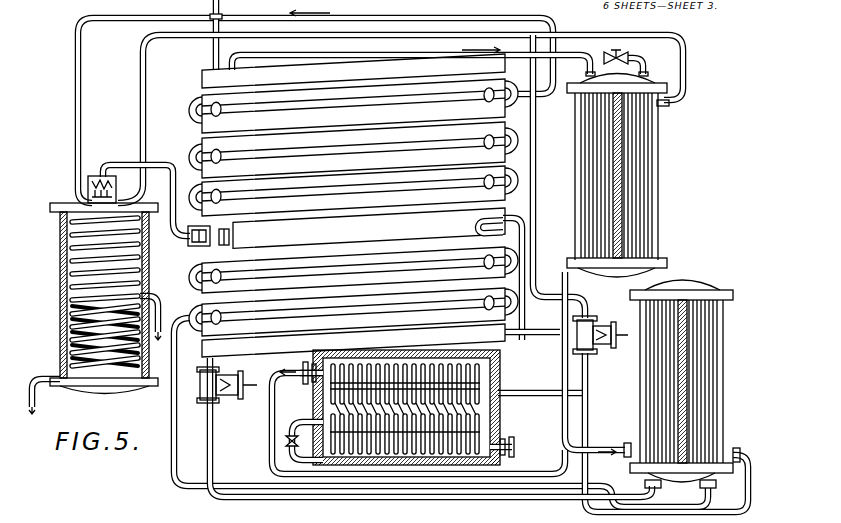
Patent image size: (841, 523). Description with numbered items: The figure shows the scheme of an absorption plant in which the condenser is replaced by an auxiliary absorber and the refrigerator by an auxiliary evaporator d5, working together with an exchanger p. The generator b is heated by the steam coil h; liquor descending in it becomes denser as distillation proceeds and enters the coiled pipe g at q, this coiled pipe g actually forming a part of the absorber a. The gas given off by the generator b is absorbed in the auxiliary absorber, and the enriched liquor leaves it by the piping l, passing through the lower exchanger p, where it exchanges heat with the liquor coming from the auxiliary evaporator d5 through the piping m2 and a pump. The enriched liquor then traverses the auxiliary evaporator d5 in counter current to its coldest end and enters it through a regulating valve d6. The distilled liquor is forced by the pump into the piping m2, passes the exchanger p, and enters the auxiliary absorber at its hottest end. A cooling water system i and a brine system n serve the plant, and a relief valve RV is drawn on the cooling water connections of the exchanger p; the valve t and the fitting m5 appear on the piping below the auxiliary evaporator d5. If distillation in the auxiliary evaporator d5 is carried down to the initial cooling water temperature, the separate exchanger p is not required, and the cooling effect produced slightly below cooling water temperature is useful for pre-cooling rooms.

The absorber a is at (353, 205).
The generator b is at (171, 243).
The auxiliary evaporator d5 is at (305, 366).
The regulating valve d6 is at (292, 462).
The coiled pipe g is at (100, 285).
The steam coil h is at (160, 299).
The cooling water system i is at (230, 239).
The piping l is at (222, 12).
The piping m2 is at (474, 498).
The valve motor m5 is at (268, 412).
The brine system n is at (288, 379).
The exchanger p is at (667, 158).
The entry of pipe g q is at (142, 368).
The valve t is at (232, 416).
The relief valve RV is at (617, 57).